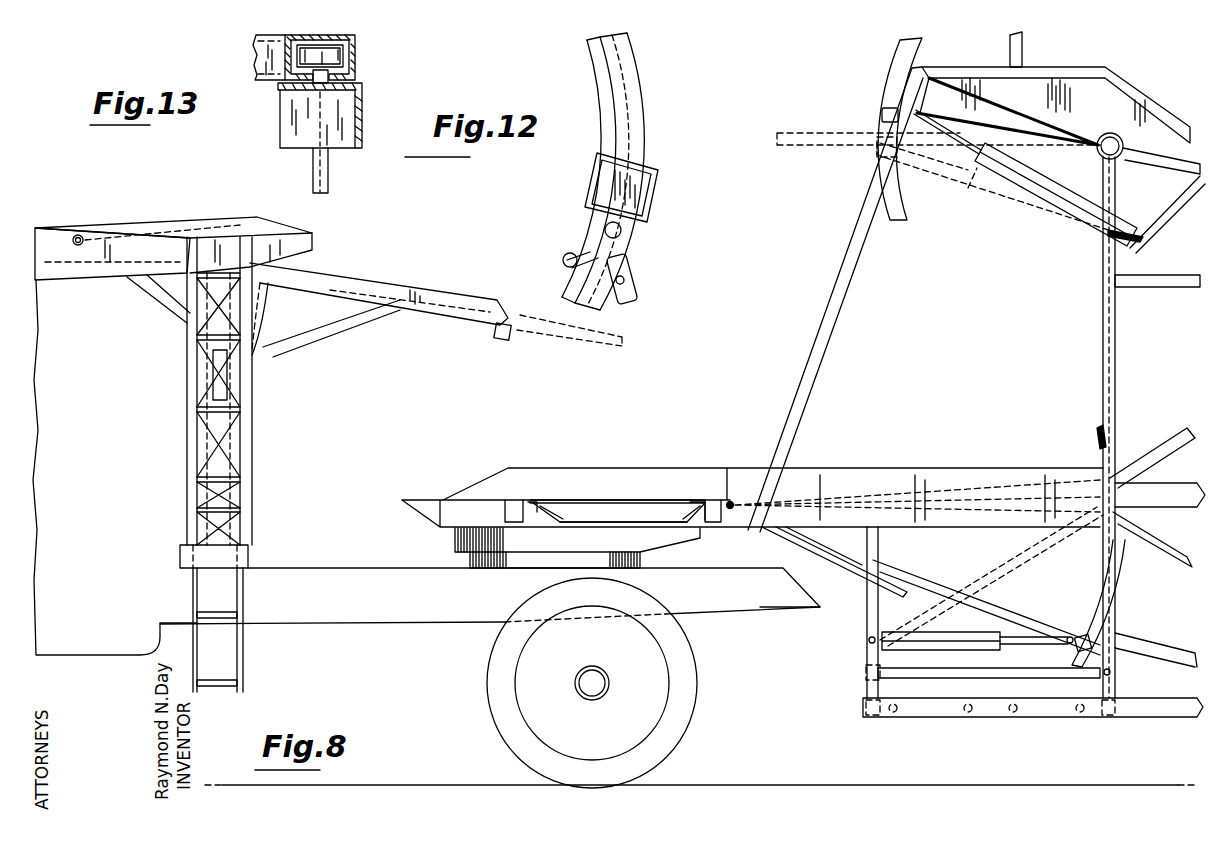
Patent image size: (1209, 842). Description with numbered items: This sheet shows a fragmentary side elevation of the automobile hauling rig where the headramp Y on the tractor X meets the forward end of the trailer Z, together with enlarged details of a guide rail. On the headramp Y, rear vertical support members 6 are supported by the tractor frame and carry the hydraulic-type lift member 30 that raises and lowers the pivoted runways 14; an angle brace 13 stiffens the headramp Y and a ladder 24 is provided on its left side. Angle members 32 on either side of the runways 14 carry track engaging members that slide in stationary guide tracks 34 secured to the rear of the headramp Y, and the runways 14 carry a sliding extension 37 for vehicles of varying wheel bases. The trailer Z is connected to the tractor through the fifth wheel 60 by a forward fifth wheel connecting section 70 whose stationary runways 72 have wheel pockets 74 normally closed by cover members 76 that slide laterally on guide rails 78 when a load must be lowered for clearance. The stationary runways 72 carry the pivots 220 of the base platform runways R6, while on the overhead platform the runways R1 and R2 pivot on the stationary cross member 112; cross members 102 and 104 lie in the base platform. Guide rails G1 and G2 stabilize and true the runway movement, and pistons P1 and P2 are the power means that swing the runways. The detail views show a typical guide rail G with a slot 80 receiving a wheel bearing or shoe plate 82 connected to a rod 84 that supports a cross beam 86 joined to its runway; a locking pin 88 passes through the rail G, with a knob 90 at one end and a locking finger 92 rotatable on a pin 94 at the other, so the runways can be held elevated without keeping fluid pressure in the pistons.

In FIG. 8, the rear vertical support members 6 is at (248, 440).
In FIG. 12, the angle brace 13 is at (565, 193).
In FIG. 8, the angle brace 13 is at (147, 283).
In FIG. 8, the pivoted runways 14 is at (394, 283).
In FIG. 8, the ladder 24 is at (245, 590).
In FIG. 8, the hydraulic-type lift member 30 is at (232, 377).
In FIG. 8, the angle members 32 is at (353, 317).
In FIG. 8, the guide tracks 34 is at (305, 257).
In FIG. 8, the sliding extension 37 is at (531, 320).
In FIG. 8, the fifth wheel 60 is at (657, 543).
In FIG. 8, the forward fifth wheel connecting section 70 is at (592, 465).
In FIG. 8, the stationary runways 72 is at (522, 500).
In FIG. 8, the wheel pockets 74 is at (643, 512).
In FIG. 8, the cover members 76 is at (597, 500).
In FIG. 8, the guide rails 78 is at (533, 502).
In FIG. 13, the slot 80 is at (350, 88).
In FIG. 12, the slot 80 is at (620, 92).
In FIG. 13, the wheel bearing or shoe plate 82 is at (343, 60).
In FIG. 13, the rod 84 is at (323, 167).
In FIG. 12, the rod 84 is at (622, 233).
In FIG. 13, the cross beam 86 is at (290, 118).
In FIG. 12, the cross beam 86 is at (585, 200).
In FIG. 8, the cross beam 86 is at (882, 115).
In FIG. 12, the locking pin 88 is at (567, 283).
In FIG. 12, the knob 90 is at (567, 255).
In FIG. 12, the rotatable locking finger 92 is at (633, 263).
In FIG. 12, the pin 94 is at (624, 283).
In FIG. 8, the cross member 102 is at (872, 720).
In FIG. 8, the cross member 104 is at (1105, 720).
In FIG. 8, the cross member or support 112 is at (1128, 128).
In FIG. 8, the pivots 220 is at (730, 503).
In FIG. 13, the guide rail G is at (356, 42).
In FIG. 12, the guide rail G is at (635, 112).
In FIG. 8, the guide rail G1 is at (897, 78).
In FIG. 8, the guide rail G2 is at (1100, 612).
In FIG. 8, the pivoted runway R1 is at (1048, 112).
In FIG. 8, the pivoted runway R2 is at (1175, 163).
In FIG. 8, the pivoted runway R6 is at (1070, 473).
In FIG. 8, the piston P1 is at (1025, 180).
In FIG. 8, the piston P2 is at (977, 622).
In FIG. 8, the tractor X is at (107, 418).
In FIG. 8, the headramp Y is at (170, 222).
In FIG. 8, the trailer Z is at (883, 467).